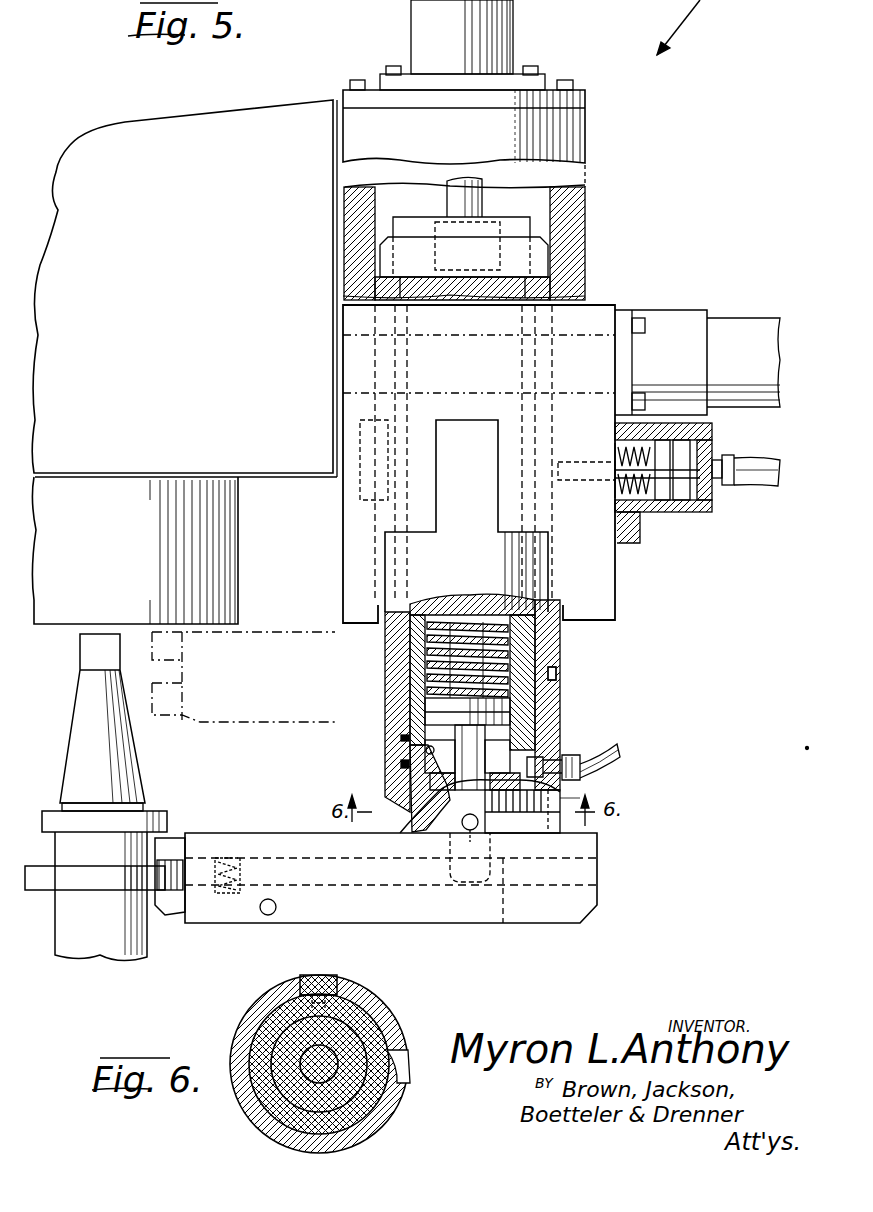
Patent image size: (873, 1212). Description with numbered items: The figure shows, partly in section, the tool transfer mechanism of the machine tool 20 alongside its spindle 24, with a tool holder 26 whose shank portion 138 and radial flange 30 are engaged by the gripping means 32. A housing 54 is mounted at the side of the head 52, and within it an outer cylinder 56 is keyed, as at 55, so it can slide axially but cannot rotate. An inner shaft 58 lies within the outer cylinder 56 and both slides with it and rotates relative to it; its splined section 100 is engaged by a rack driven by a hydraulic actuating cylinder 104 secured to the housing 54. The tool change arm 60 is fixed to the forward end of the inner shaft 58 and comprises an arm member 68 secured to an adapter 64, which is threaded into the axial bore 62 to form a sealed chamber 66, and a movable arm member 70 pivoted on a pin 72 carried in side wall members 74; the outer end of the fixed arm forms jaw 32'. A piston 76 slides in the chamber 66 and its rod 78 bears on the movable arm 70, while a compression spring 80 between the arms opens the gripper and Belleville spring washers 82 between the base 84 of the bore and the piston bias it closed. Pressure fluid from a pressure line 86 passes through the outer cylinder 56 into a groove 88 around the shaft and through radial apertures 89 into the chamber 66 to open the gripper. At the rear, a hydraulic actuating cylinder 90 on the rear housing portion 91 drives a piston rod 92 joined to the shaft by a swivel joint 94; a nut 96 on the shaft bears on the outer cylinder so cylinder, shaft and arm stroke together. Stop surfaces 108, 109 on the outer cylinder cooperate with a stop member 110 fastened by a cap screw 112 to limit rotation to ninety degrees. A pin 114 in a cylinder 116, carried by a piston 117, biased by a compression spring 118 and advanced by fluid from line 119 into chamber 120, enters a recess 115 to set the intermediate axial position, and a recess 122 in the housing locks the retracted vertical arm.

In FIG. 5, the machine tool 20 is at (108, 123).
In FIG. 5, the spindle 24 is at (55, 628).
In FIG. 5, the tool holder 26 is at (62, 940).
In FIG. 5, the radial flange 30 is at (150, 882).
In FIG. 5, the tool gripping means 32 is at (171, 912).
In FIG. 5, the gripper jaw 32' is at (200, 814).
In FIG. 5, the head 52 is at (268, 173).
In FIG. 5, the housing 54 is at (618, 594).
In FIG. 5, the key 55 is at (360, 435).
In FIG. 5, the outer cylinder 56 is at (375, 286).
In FIG. 6, the outer cylinder 56 is at (380, 1118).
In FIG. 5, the inner shaft 58 is at (578, 292).
In FIG. 6, the inner shaft 58 is at (262, 1085).
In FIG. 5, the tool change arm 60 is at (290, 722).
In FIG. 5, the axial bore 62 is at (435, 746).
In FIG. 5, the adapter 64 is at (452, 832).
In FIG. 5, the sealed chamber 66 is at (540, 757).
In FIG. 5, the arm member 68 is at (272, 850).
In FIG. 5, the movable arm member 70 is at (488, 904).
In FIG. 5, the pin 72 is at (276, 905).
In FIG. 5, the side wall member 74 is at (597, 880).
In FIG. 5, the piston 76 is at (430, 712).
In FIG. 5, the piston rod 78 is at (542, 832).
In FIG. 6, the piston rod 78 is at (300, 1055).
In FIG. 5, the compression spring 80 is at (240, 858).
In FIG. 5, the Belleville spring washers 82 is at (440, 650).
In FIG. 5, the base of the bore 84 is at (478, 605).
In FIG. 5, the pressure line 86 is at (614, 768).
In FIG. 5, the groove 88 is at (400, 775).
In FIG. 5, the radial apertures 89 is at (555, 800).
In FIG. 5, the hydraulic actuating cylinder 90 is at (515, 22).
In FIG. 5, the rear housing portion 91 is at (585, 200).
In FIG. 5, the piston rod 92 is at (483, 200).
In FIG. 5, the swivel joint 94 is at (437, 248).
In FIG. 5, the nut 96 is at (548, 245).
In FIG. 5, the splined section 100 is at (527, 385).
In FIG. 5, the hydraulic actuating cylinder 104 is at (695, 312).
In FIG. 5, the stop surface 108 is at (458, 830).
In FIG. 6, the stop surface 108 is at (305, 980).
In FIG. 5, the stop surface 109 is at (558, 805).
In FIG. 6, the stop surface 109 is at (395, 1084).
In FIG. 5, the stop member 110 is at (488, 860).
In FIG. 6, the stop member 110 is at (340, 984).
In FIG. 5, the cap screw 112 is at (470, 832).
In FIG. 6, the cap screw 112 is at (340, 1000).
In FIG. 5, the pin 114 is at (575, 462).
In FIG. 5, the recess 115 is at (565, 678).
In FIG. 5, the cylinder 116 is at (695, 513).
In FIG. 5, the piston 117 is at (680, 460).
In FIG. 5, the compression spring 118 is at (640, 525).
In FIG. 5, the fluid line 119 is at (750, 465).
In FIG. 5, the chamber 120 is at (697, 478).
In FIG. 5, the recess 122 is at (395, 562).
In FIG. 5, the shank portion 138 is at (75, 718).